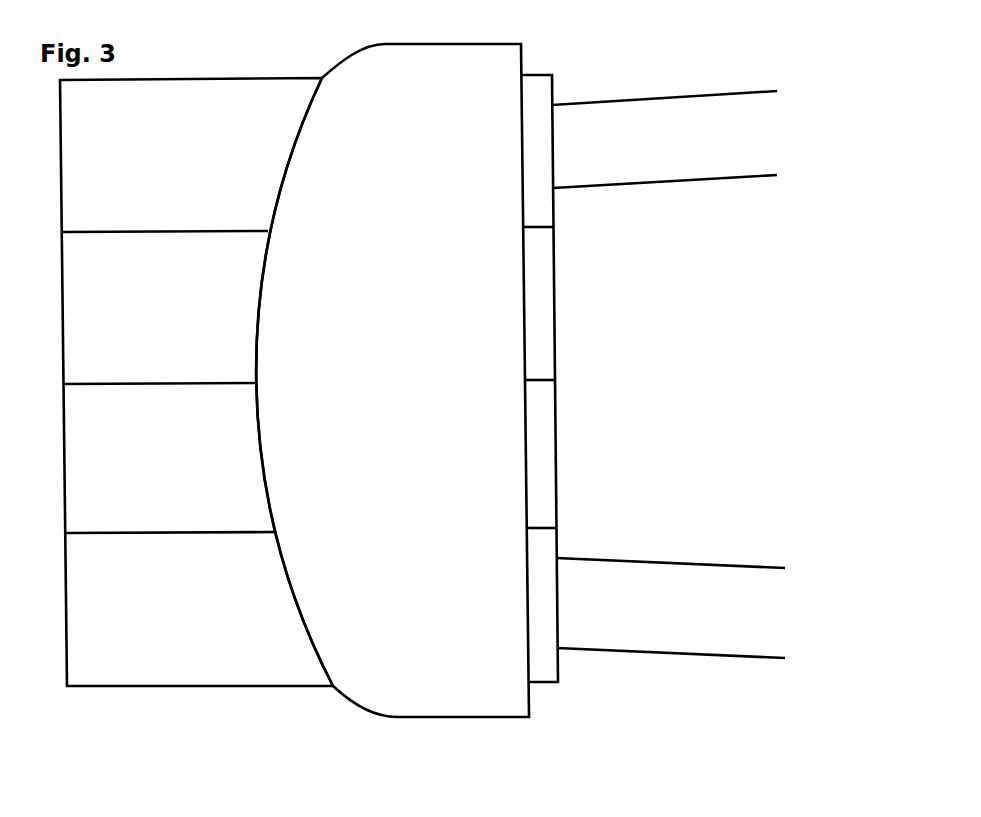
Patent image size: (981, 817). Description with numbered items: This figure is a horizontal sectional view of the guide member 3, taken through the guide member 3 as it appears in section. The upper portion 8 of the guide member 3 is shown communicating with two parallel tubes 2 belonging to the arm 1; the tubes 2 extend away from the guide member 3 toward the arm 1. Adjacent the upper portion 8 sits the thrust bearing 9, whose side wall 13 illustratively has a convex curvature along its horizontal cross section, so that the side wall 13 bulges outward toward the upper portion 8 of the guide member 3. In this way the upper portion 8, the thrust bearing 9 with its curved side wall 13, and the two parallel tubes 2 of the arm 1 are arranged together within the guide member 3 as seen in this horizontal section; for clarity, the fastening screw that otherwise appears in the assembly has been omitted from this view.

The arm 1 is at (653, 378).
The parallel tubes 2 is at (640, 168).
The guide member 3 is at (422, 394).
The upper portion 8 is at (186, 160).
The thrust bearing 9 is at (428, 276).
The side wall 13 is at (250, 320).